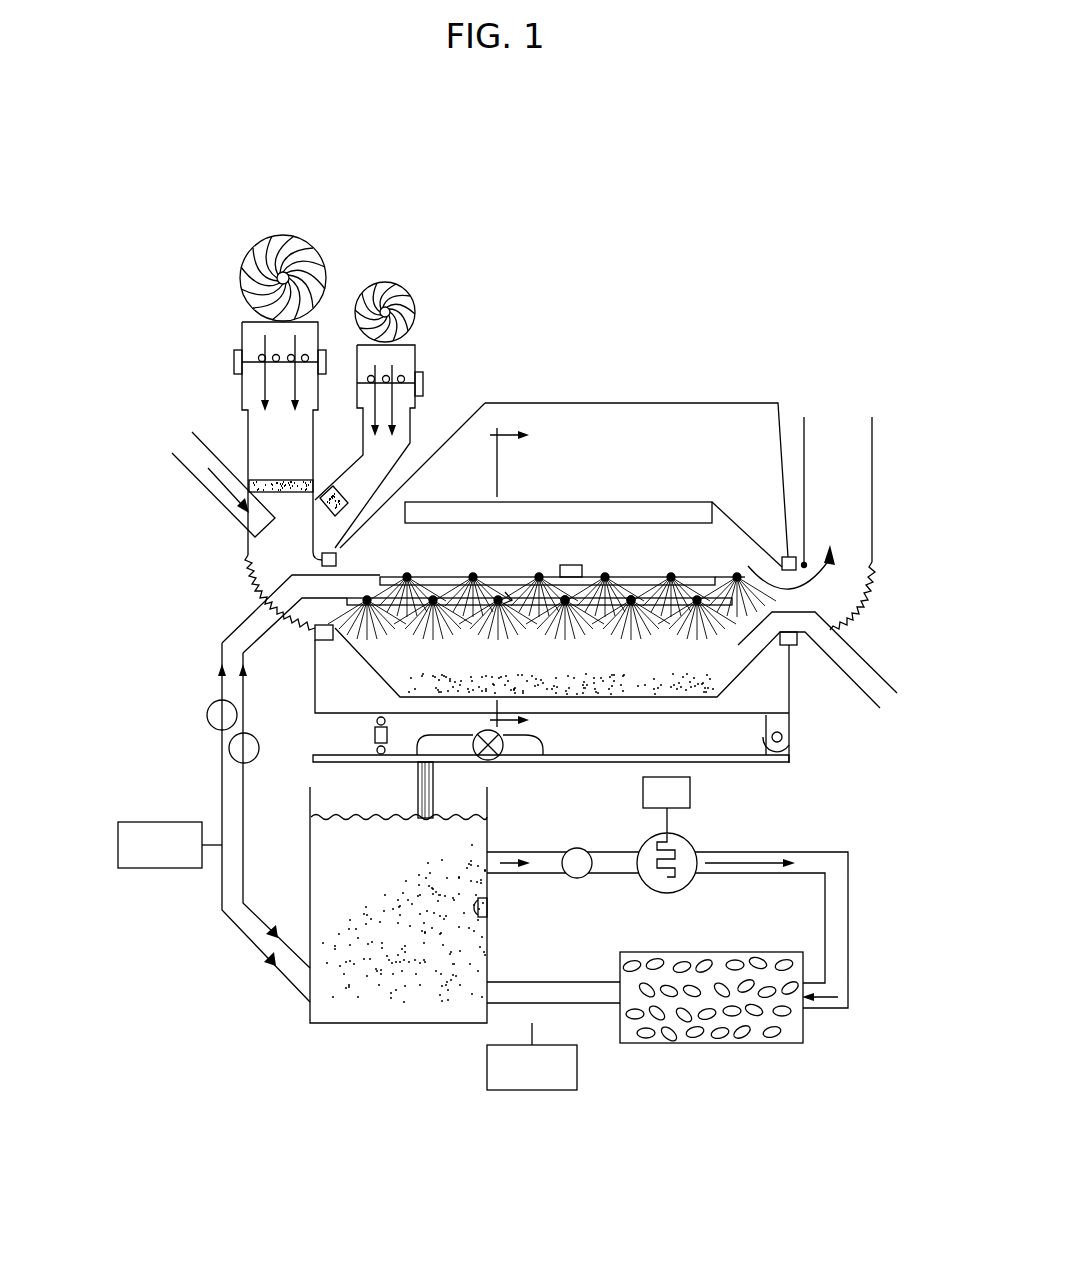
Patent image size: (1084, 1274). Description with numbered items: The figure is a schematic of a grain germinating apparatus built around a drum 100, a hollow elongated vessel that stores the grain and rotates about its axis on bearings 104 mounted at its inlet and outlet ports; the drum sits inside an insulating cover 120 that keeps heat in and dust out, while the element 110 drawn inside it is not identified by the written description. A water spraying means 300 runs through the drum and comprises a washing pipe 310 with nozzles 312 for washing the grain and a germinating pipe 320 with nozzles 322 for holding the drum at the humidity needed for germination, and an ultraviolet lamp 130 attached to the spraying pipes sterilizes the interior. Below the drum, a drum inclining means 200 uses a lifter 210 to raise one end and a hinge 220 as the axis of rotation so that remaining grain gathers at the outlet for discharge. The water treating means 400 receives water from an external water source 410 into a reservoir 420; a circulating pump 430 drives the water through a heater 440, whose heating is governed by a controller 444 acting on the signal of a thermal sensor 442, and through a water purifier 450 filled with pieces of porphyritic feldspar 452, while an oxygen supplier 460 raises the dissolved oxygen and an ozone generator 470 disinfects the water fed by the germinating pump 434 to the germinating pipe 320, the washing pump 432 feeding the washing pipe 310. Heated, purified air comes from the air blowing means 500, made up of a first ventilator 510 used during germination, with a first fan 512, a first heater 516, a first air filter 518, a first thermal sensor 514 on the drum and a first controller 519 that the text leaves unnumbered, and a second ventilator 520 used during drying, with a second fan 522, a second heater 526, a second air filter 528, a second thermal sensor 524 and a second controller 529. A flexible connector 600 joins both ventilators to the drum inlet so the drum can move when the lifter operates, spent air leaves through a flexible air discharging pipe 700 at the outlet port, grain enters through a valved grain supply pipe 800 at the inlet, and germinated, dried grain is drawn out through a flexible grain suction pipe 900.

The drum 100 is at (626, 486).
The bearings 104 is at (338, 559).
The heating plate 110 is at (670, 507).
The insulating cover 120 is at (754, 402).
The ultraviolet lamp 130 is at (515, 600).
The drum inclining means 200 is at (348, 738).
The lifter 210 is at (378, 722).
The hinge 220 is at (783, 737).
The water spraying means 300 is at (646, 568).
The washing pipe 310 is at (462, 614).
The nozzles 312 is at (567, 608).
The germinating pipe 320 is at (445, 574).
The nozzles 322 is at (537, 572).
The water treating means 400 is at (270, 1010).
The external water source 410 is at (522, 738).
The reservoir 420 is at (372, 1023).
The circulating pump 430 is at (585, 878).
The washing pump 432 is at (229, 752).
The germinating pump 434 is at (206, 715).
The heater 440 is at (689, 882).
The thermal sensor 442 is at (490, 933).
The controller 444 is at (690, 803).
The water purifier 450 is at (725, 1043).
The porphyritic feldspar 452 is at (785, 1012).
The oxygen supplier 460 is at (577, 1075).
The ozone generator 470 is at (157, 868).
The air blowing means 500 is at (387, 196).
The first ventilator 510 is at (401, 266).
The first fan 512 is at (412, 305).
The first thermal sensor 514 is at (633, 608).
The first heater 516 is at (400, 382).
The first air filter 518 is at (300, 548).
The second heater terminal 519 is at (425, 362).
The second ventilator 520 is at (262, 226).
The second fan 522 is at (304, 242).
The second thermal sensor 524 is at (575, 565).
The second heater 526 is at (262, 357).
The second air filter 528 is at (285, 483).
The second controller 529 is at (235, 360).
The connector 600 is at (252, 575).
The air discharging pipe 700 is at (872, 487).
The grain supply pipe 800 is at (200, 481).
The grain suction pipe 900 is at (855, 650).